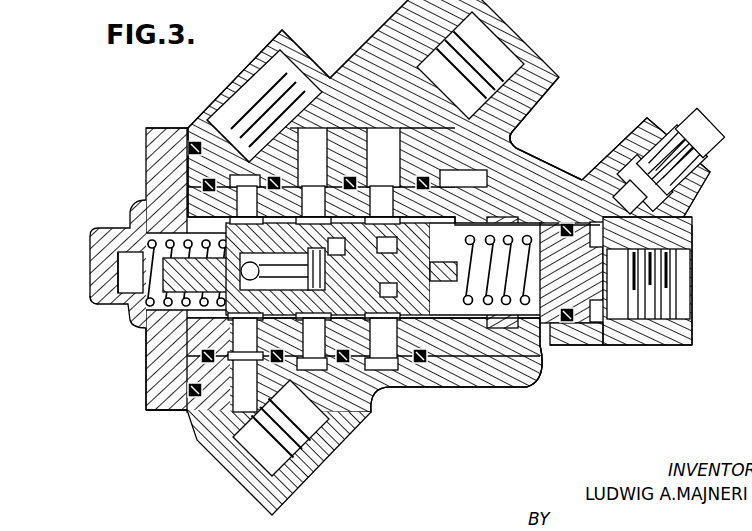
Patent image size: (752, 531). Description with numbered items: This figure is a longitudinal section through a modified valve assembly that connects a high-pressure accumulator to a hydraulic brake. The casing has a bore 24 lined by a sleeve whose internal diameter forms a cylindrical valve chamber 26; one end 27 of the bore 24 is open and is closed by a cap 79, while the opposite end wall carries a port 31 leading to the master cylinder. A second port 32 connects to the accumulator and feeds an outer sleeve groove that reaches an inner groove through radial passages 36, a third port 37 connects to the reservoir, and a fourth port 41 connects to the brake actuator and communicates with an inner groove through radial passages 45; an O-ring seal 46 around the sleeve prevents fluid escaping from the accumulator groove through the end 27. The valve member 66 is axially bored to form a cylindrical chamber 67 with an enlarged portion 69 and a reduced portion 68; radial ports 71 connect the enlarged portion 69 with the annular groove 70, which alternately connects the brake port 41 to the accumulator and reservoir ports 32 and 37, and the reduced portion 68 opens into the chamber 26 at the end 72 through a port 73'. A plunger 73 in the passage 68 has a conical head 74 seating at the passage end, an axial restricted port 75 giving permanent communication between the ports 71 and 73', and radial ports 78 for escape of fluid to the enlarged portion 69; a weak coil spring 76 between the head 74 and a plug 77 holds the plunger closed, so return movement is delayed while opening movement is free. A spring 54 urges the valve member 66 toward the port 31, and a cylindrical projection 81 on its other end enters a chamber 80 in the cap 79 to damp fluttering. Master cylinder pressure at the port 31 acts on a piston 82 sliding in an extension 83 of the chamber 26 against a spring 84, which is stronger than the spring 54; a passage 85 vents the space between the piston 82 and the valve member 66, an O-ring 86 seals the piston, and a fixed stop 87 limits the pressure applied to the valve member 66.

The bore 24 is at (170, 410).
The valve chamber 26 is at (150, 390).
The end of the bore 27 is at (130, 226).
The port 31 is at (667, 289).
The second port 32 is at (310, 472).
The radial ports or passages 36 is at (148, 178).
The third port 37 is at (506, 50).
The fourth port 41 is at (266, 72).
The radial passages 45 is at (248, 124).
The O-ring seal 46 is at (408, 172).
The spring 54 is at (130, 316).
The valve member 66 is at (415, 298).
The cylindrical chamber 67 is at (402, 390).
The reduced portion 68 is at (150, 354).
The enlarged portion 69 is at (505, 176).
The annular groove 70 is at (381, 186).
The radial ports 71 is at (336, 248).
The end of the valve member 72 is at (165, 207).
The plunger 73 is at (245, 362).
The port 73' is at (87, 273).
The head 74 is at (316, 292).
The restricted port 75 is at (311, 186).
The coil spring 76 is at (340, 178).
The plug 77 is at (426, 388).
The radial ports 78 is at (270, 272).
The cap 79 is at (100, 306).
The chamber 80 is at (126, 266).
The cylindrical projection 81 is at (96, 294).
The piston 82 is at (573, 325).
The extension 83 is at (540, 352).
The spring 84 is at (505, 330).
The passage 85 is at (525, 222).
The O-ring 86 is at (565, 347).
The fixed stop 87 is at (540, 160).